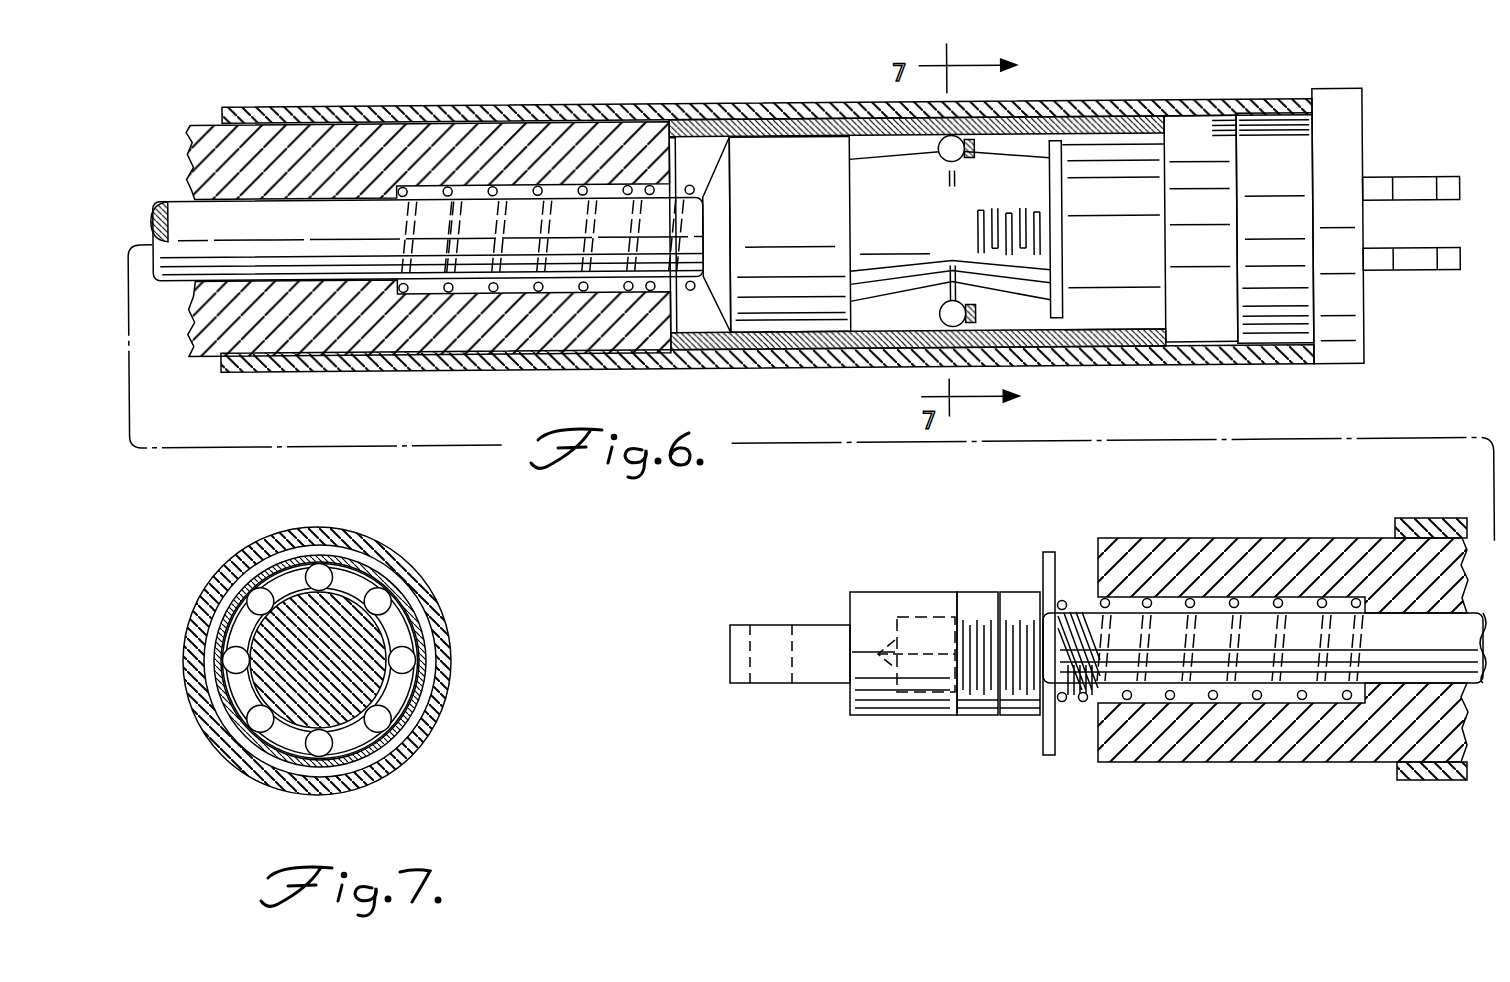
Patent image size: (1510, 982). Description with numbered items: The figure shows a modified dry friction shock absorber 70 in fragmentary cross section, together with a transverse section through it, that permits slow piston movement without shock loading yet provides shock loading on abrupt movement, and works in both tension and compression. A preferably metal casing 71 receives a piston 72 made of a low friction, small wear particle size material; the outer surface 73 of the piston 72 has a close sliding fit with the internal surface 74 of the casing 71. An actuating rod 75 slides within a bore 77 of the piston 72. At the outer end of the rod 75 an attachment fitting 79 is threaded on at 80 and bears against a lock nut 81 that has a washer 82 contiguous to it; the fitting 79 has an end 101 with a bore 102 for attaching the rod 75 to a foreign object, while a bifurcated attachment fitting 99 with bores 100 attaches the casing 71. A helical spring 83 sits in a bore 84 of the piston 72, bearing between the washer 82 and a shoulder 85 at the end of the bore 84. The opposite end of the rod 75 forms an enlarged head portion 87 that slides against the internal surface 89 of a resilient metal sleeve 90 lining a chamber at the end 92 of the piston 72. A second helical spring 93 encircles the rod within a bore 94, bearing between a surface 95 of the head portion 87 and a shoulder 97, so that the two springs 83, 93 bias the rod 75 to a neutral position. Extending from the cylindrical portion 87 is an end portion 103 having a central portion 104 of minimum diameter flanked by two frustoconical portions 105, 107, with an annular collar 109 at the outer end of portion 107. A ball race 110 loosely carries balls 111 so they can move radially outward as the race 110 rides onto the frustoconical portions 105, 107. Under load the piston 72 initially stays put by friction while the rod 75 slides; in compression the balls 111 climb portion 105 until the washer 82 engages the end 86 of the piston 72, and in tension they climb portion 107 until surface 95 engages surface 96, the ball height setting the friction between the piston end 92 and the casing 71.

In FIG. 6, the dry friction shock absorber 70 is at (376, 90).
In FIG. 6, the casing 71 is at (1132, 371).
In FIG. 7, the casing 71 is at (227, 743).
In FIG. 6, the piston 72 is at (600, 120).
In FIG. 6, the outer surface 73 is at (198, 118).
In FIG. 6, the internal surface 74 is at (1237, 142).
In FIG. 6, the actuating rod 75 is at (176, 197).
In FIG. 6, the bore 77 is at (244, 197).
In FIG. 6, the attachment fitting 79 is at (894, 715).
In FIG. 6, the threaded connection 80 is at (972, 615).
In FIG. 6, the lock nut 81 is at (1024, 723).
In FIG. 6, the washer 82 is at (1062, 555).
In FIG. 6, the helical spring 83 is at (1242, 600).
In FIG. 6, the bore 84 is at (1167, 603).
In FIG. 6, the shoulder 85 is at (1362, 600).
In FIG. 6, the end 86 is at (1095, 747).
In FIG. 6, the enlarged head portion 87 is at (800, 147).
In FIG. 6, the internal surface 89 is at (1124, 306).
In FIG. 6, the resilient metal sleeve 90 is at (1152, 331).
In FIG. 7, the resilient metal sleeve 90 is at (250, 574).
In FIG. 6, the end 92 is at (1127, 123).
In FIG. 7, the end 92 is at (428, 650).
In FIG. 6, the helical spring 93 is at (548, 290).
In FIG. 6, the bore 94 is at (468, 285).
In FIG. 6, the surface 95 is at (714, 147).
In FIG. 6, the surface 96 is at (676, 332).
In FIG. 6, the shoulder 97 is at (455, 184).
In FIG. 6, the bifurcated attachment fitting 99 is at (1350, 110).
In FIG. 6, the bores 100 is at (1440, 192).
In FIG. 6, the end 101 is at (808, 683).
In FIG. 6, the bore 102 is at (770, 635).
In FIG. 6, the end portion 103 is at (873, 220).
In FIG. 7, the end portion 103 is at (427, 707).
In FIG. 6, the central portion 104 is at (957, 197).
In FIG. 6, the frustoconical portion 105 is at (927, 158).
In FIG. 6, the frustoconical portion 107 is at (1047, 155).
In FIG. 6, the annular collar 109 is at (1063, 264).
In FIG. 6, the ball race 110 is at (1042, 370).
In FIG. 7, the ball race 110 is at (425, 614).
In FIG. 6, the balls 111 is at (935, 163).
In FIG. 7, the balls 111 is at (382, 553).